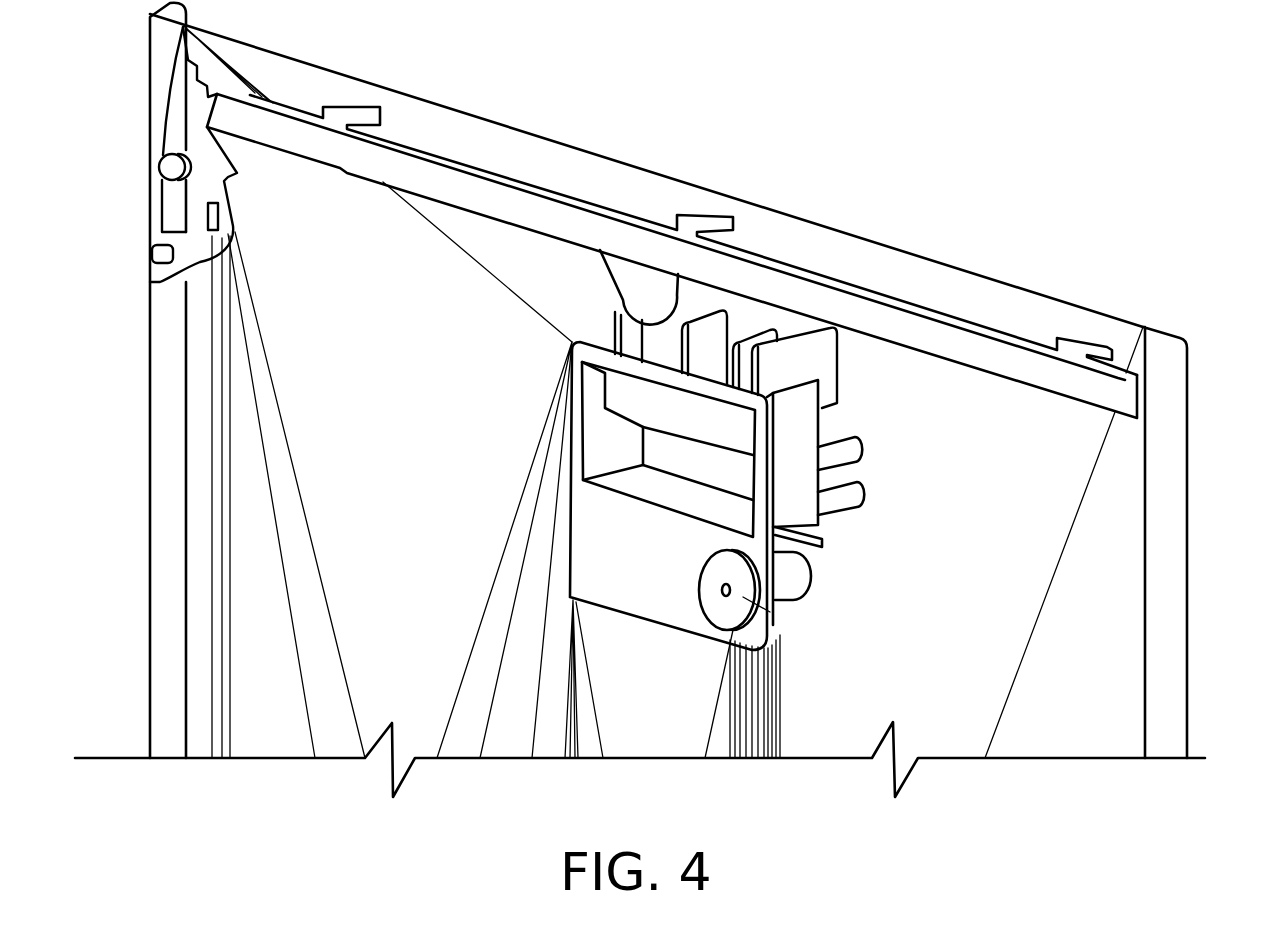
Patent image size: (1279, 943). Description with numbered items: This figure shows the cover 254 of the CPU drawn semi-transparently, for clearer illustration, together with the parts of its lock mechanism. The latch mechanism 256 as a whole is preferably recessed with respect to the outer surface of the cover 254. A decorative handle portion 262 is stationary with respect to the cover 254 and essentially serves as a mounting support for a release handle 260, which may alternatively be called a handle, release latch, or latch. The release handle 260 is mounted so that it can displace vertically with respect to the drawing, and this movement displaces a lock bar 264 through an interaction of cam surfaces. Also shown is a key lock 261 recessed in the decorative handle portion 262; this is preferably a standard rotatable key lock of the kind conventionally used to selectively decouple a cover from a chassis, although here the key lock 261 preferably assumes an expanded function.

The cover 254 is at (172, 442).
The latch mechanism 256 is at (568, 548).
The release handle 260 is at (718, 337).
The key lock 261 is at (770, 612).
The decorative handle portion 262 is at (683, 613).
The lock bar 264 is at (912, 315).